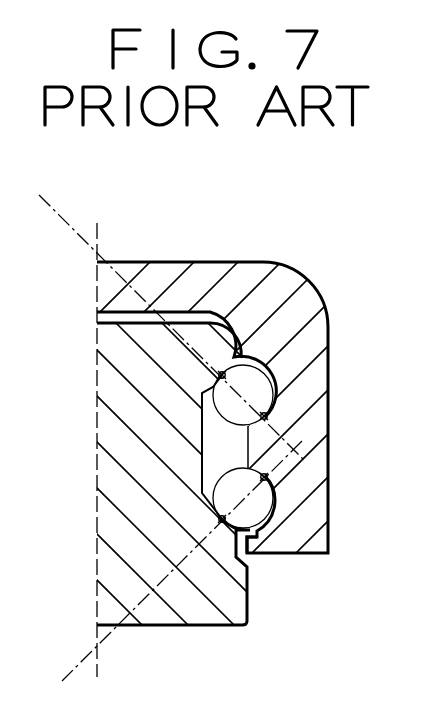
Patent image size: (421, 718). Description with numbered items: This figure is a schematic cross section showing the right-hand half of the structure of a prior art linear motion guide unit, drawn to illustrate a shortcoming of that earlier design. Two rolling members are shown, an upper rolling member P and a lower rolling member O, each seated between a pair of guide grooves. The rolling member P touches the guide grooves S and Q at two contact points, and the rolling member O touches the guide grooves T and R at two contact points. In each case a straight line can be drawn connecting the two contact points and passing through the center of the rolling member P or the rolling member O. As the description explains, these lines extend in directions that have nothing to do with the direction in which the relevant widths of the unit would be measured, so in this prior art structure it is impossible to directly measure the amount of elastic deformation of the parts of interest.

The rolling member P is at (270, 374).
The guide groove Q is at (206, 405).
The guide groove S is at (267, 416).
The guide groove T is at (265, 481).
The rolling member O is at (262, 512).
The guide groove R is at (259, 540).